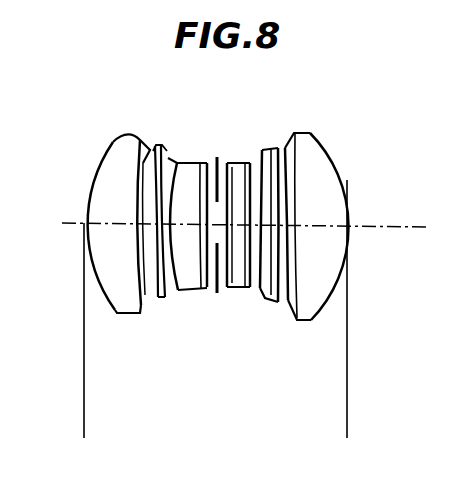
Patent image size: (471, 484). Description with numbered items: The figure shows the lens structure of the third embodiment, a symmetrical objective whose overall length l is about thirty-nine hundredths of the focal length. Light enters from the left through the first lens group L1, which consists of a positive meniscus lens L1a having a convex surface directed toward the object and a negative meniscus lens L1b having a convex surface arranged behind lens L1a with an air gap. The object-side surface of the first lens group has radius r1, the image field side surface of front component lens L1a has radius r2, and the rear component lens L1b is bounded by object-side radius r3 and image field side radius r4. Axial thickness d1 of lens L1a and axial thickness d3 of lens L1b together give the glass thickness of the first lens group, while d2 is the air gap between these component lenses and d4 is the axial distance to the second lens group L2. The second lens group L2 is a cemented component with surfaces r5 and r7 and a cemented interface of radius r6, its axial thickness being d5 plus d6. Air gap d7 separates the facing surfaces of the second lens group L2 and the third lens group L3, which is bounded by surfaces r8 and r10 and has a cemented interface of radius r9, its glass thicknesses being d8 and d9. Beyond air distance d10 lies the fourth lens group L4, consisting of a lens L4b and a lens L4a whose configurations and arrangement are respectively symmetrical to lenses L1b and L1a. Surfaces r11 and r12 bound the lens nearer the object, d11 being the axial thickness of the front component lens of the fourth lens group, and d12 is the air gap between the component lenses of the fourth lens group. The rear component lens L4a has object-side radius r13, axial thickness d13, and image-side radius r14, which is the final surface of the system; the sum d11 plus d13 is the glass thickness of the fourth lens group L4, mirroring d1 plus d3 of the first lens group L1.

The radius of curvature of object-side surface of first lens group r1 is at (117, 141).
The radius of curvature of image-side surface of front component lens of first lens r2 is at (140, 133).
The radius of curvature of object-side surface of rear component lens of first lens r3 is at (156, 145).
The radius of curvature of image-side surface of rear component lens of first lens g r4 is at (172, 160).
The radius of curvature of lens surface r5 is at (199, 160).
The radius of curvature of cemented interface in second lens group r6 is at (207, 160).
The radius of curvature of lens surface r7 is at (227, 160).
The radius of curvature of lens surface r8 is at (250, 160).
The radius of curvature of cemented interface in third lens group r9 is at (263, 150).
The radius of curvature of lens surface r10 is at (271, 150).
The radius of curvature of object-side surface of component lens of fourth lens grou r11 is at (280, 150).
The radius of curvature of image-side surface of component lens of fourth lens group r12 is at (288, 165).
The radius of curvature of object-side surface of rear component lens of fourth lens r13 is at (295, 185).
The radius of curvature of image-side surface of fourth lens group r14 is at (340, 180).
The axial thickness of front component lens of first lens group d1 is at (110, 207).
The air gap between component lenses of first lens group d2 is at (143, 231).
The axial thickness of rear component lens of first lens group d3 is at (147, 255).
The axial air gap d4 is at (156, 318).
The axial thickness of component of second lens group d5 is at (185, 212).
The axial thickness of component of second lens group d6 is at (192, 291).
The air gap between second and third lens groups d7 is at (238, 311).
The axial thickness of component of third lens group d8 is at (278, 313).
The axial thickness of component of third lens group d9 is at (253, 213).
The axial air gap d10 is at (282, 262).
The axial thickness of front component lens of fourth lens group d11 is at (281, 245).
The air gap between component lenses of fourth lens group d12 is at (280, 232).
The axial thickness of rear component lens of fourth lens group d13 is at (327, 213).
The positive meniscus lens L1a is at (121, 230).
The negative meniscus lens L1b is at (125, 230).
The second lens group L2 is at (198, 224).
The third lens group L3 is at (247, 226).
The front component lens of fourth lens group L4b is at (293, 236).
The rear component lens of fourth lens group L4a is at (341, 237).
The first lens group L1 is at (198, 385).
The fourth lens group L4 is at (338, 387).
The length of whole lens system l is at (347, 431).